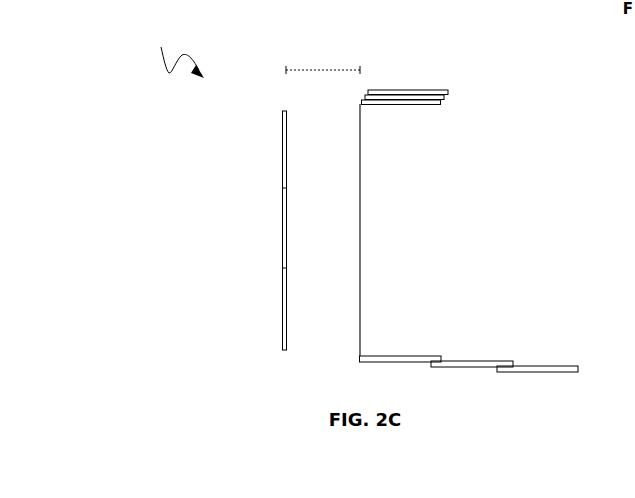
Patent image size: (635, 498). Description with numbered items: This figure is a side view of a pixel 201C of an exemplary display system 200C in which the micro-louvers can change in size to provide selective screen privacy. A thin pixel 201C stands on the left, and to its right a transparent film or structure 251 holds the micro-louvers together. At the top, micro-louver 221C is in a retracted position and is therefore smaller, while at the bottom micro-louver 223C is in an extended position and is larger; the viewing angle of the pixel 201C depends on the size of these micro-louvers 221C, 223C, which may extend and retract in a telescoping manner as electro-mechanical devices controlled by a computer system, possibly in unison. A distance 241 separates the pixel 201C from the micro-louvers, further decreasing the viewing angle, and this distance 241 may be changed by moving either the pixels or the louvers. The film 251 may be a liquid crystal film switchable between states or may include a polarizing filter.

The system 200C is at (175, 45).
The pixel 201C is at (282, 111).
The distance 241 is at (330, 69).
The micro-louver 221C is at (413, 90).
The transparent film 251 is at (362, 223).
The micro-louver 223C is at (549, 377).